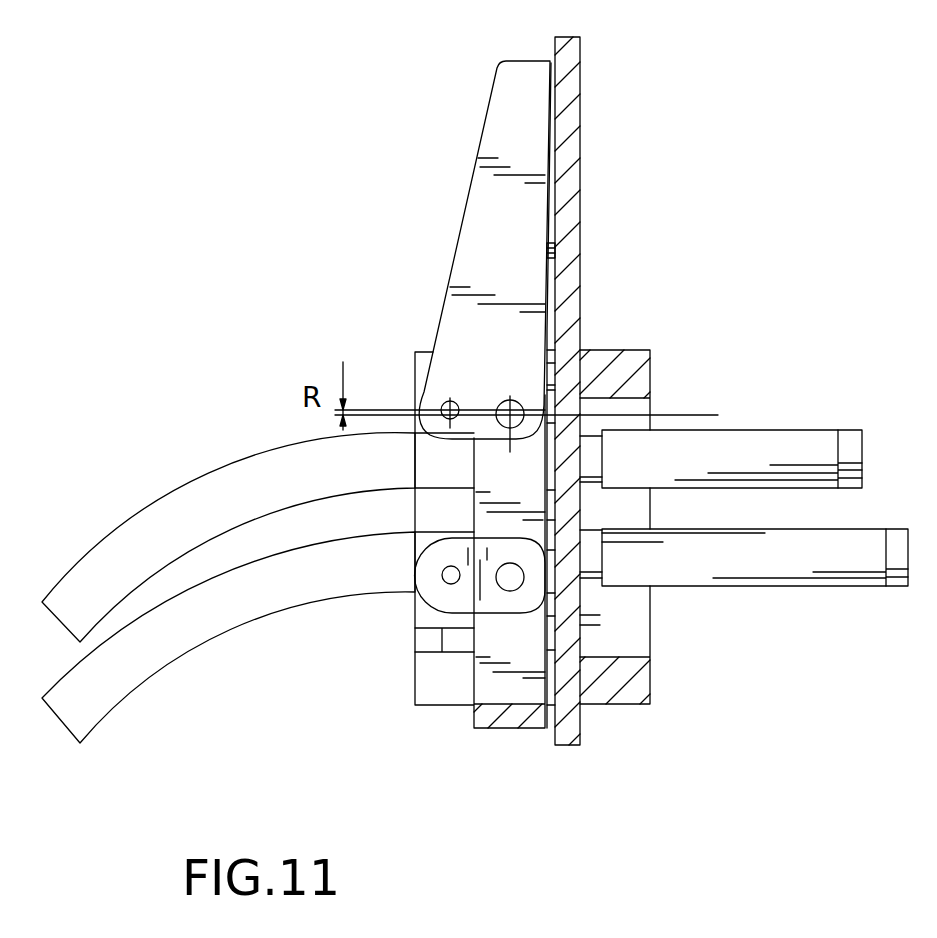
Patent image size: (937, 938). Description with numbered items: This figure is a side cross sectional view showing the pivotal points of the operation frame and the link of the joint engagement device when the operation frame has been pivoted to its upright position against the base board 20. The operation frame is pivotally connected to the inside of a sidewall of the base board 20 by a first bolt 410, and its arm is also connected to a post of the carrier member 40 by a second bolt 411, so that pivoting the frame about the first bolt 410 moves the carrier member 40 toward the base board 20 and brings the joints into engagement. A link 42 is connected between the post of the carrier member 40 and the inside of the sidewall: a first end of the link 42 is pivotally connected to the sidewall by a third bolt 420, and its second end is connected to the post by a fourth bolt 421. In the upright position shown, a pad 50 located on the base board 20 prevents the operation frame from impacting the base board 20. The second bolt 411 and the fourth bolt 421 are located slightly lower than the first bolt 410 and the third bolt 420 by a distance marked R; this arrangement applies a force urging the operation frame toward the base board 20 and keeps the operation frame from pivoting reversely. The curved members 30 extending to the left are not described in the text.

The base board 20 is at (572, 117).
The curved arms 30 is at (292, 598).
The carrier member 40 is at (482, 75).
The link 42 is at (457, 597).
The pad 50 is at (556, 250).
The first bolt 410 is at (442, 405).
The second bolt 411 is at (503, 403).
The third bolt 420 is at (443, 579).
The fourth bolt 421 is at (507, 578).